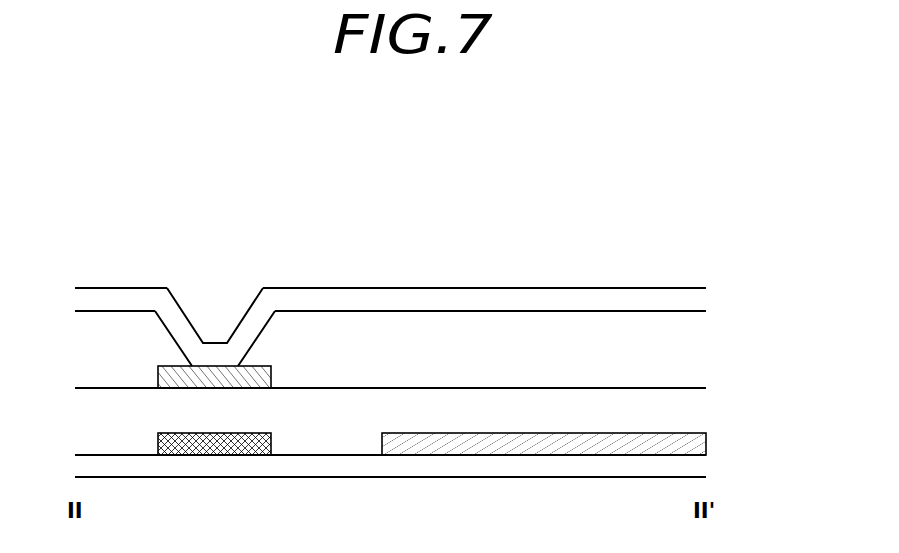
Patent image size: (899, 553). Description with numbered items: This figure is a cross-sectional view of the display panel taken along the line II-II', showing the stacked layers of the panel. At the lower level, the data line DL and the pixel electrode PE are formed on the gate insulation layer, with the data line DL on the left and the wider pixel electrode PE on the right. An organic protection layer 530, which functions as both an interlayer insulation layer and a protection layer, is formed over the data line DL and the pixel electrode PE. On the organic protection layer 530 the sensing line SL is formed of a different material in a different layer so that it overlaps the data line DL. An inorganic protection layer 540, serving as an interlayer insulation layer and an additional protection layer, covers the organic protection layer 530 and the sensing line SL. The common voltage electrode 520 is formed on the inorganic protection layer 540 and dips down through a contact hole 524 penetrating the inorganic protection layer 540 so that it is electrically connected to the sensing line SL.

The common voltage electrode 520 is at (700, 300).
The contact hole 524 is at (199, 297).
The inorganic protection layer 540 is at (700, 336).
The organic protection layer 530 is at (700, 400).
The sensing line SL is at (167, 382).
The data line DL is at (210, 452).
The pixel electrode PE is at (702, 443).